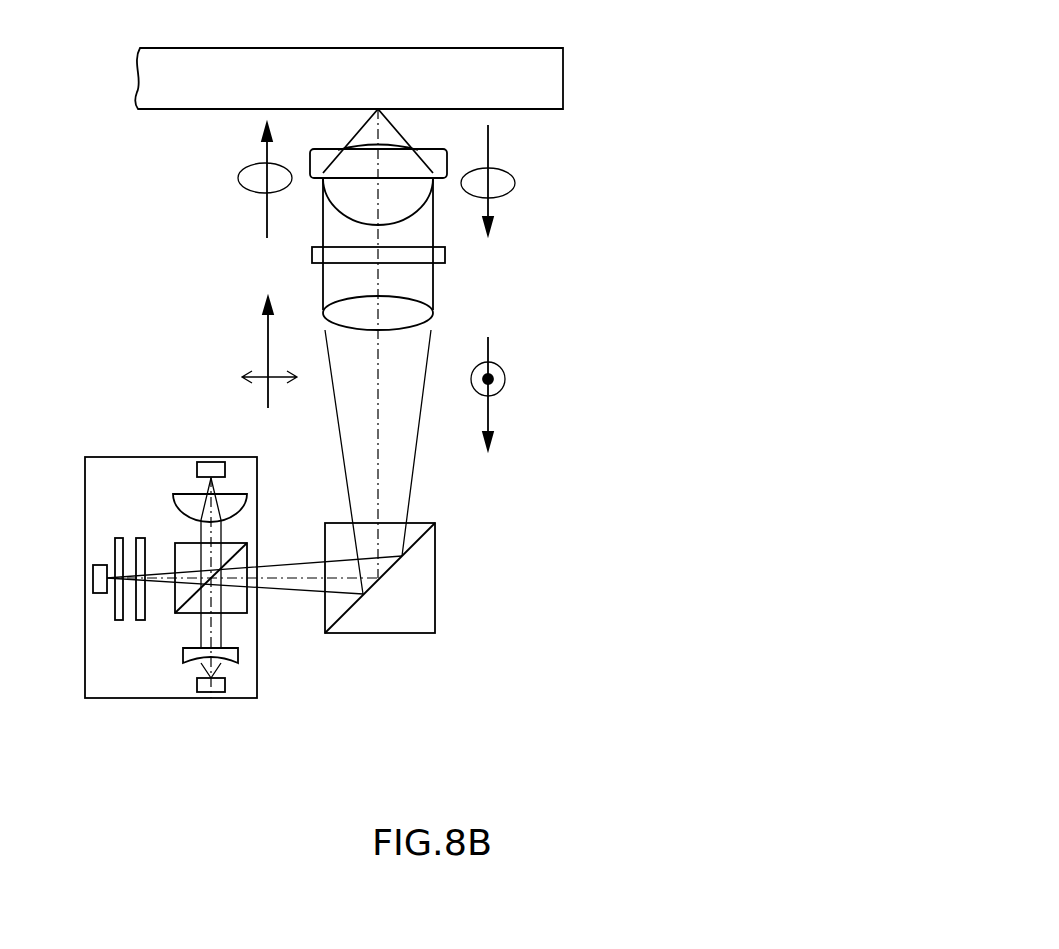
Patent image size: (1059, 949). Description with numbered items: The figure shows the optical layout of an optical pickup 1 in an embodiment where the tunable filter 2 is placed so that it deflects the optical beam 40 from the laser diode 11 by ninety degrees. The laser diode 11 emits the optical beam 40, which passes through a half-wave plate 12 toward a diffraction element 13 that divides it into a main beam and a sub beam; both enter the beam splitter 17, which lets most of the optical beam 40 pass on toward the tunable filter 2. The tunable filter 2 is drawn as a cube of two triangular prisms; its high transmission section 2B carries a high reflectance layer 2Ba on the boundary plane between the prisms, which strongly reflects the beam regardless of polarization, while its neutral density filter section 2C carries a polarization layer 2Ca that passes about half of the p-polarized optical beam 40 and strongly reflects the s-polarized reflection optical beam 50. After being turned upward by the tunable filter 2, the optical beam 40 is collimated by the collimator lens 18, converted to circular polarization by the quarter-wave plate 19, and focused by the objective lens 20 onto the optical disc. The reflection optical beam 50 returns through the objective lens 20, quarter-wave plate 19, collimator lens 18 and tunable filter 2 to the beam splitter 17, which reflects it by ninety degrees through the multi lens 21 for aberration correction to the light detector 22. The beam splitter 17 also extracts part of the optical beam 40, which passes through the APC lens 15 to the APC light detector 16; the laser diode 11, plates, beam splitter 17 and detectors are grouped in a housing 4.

The optical pickup 1 is at (604, 25).
The tunable filter 2 is at (499, 599).
The high transmission section 2B is at (466, 570).
The neutral density filter section 2C is at (466, 570).
The high reflectance layer 2Ba is at (466, 569).
The polarization layer 2Ca is at (417, 530).
The light source / detector unit 4 is at (85, 698).
The laser diode 11 is at (93, 577).
The half-wave plate 12 is at (119, 620).
The diffraction element 13 is at (140, 620).
The APC lens 15 is at (175, 494).
The APC light detector 16 is at (210, 462).
The beam splitter 17 is at (247, 613).
The collimator lens 18 is at (433, 313).
The quarter-wave plate 19 is at (445, 255).
The objective lens 20 is at (440, 149).
The multi lens 21 is at (238, 665).
The light detector 22 is at (214, 692).
The optical beam 40 is at (267, 150).
The reflection optical beam 50 is at (488, 143).